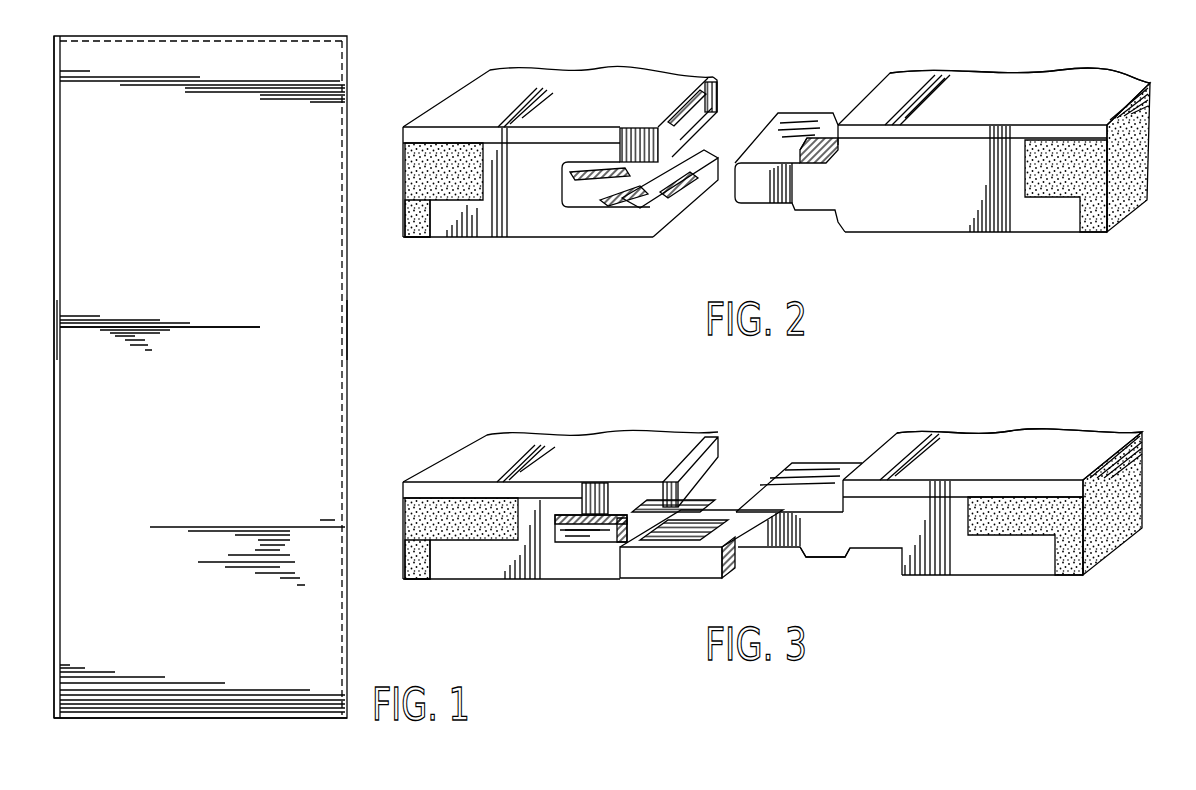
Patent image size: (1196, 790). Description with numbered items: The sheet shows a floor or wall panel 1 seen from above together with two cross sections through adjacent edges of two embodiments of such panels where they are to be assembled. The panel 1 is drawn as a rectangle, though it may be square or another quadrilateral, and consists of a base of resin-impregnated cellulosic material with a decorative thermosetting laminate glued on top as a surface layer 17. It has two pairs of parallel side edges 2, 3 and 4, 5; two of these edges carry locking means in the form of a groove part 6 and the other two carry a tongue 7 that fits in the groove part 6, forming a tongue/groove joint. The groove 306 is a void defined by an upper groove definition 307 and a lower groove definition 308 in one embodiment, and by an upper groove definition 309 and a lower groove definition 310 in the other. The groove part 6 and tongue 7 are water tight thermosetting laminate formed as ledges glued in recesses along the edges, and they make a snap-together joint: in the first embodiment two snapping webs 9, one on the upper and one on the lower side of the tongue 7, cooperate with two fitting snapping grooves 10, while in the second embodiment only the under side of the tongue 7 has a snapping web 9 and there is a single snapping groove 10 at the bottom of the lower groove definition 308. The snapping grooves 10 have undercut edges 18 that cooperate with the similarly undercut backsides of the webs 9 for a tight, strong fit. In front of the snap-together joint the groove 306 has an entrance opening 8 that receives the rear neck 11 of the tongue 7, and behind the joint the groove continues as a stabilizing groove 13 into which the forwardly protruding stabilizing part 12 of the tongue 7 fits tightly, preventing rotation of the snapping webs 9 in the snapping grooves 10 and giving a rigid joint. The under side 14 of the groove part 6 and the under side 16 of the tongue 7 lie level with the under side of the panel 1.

In FIG. 1, the panel 1 is at (265, 327).
In FIG. 1, the side edge 2 is at (348, 327).
In FIG. 1, the side edge 3 is at (57, 328).
In FIG. 1, the side edge 4 is at (284, 37).
In FIG. 1, the side edge 5 is at (210, 720).
In FIG. 2, the groove part 6 is at (558, 151).
In FIG. 3, the groove part 6 is at (594, 580).
In FIG. 2, the tongue 7 is at (994, 150).
In FIG. 3, the tongue 7 is at (992, 502).
In FIG. 2, the entrance opening 8 is at (652, 140).
In FIG. 3, the entrance opening 8 is at (686, 496).
In FIG. 2, the snapping web 9 is at (836, 120).
In FIG. 3, the snapping web 9 is at (820, 562).
In FIG. 2, the snapping groove 10 is at (626, 132).
In FIG. 3, the snapping groove 10 is at (604, 558).
In FIG. 2, the rear neck 11 is at (790, 172).
In FIG. 1, the stabilizing part 12 is at (57, 175).
In FIG. 2, the stabilizing part 12 is at (765, 205).
In FIG. 3, the stabilizing part 12 is at (774, 542).
In FIG. 1, the stabilizing groove 13 is at (340, 157).
In FIG. 2, the stabilizing groove 13 is at (595, 225).
In FIG. 3, the stabilizing groove 13 is at (584, 534).
In FIG. 2, the under side of the groove part 14 is at (476, 240).
In FIG. 3, the under side of the groove part 14 is at (480, 582).
In FIG. 2, the under side of the tongue 16 is at (890, 235).
In FIG. 3, the under side of the tongue 16 is at (976, 578).
In FIG. 2, the surface layer 17 is at (940, 78).
In FIG. 3, the surface layer 17 is at (1058, 450).
In FIG. 2, the undercut edge 18 is at (638, 133).
In FIG. 3, the undercut edge 18 is at (638, 558).
In FIG. 2, the groove 306 is at (695, 137).
In FIG. 3, the groove 306 is at (718, 504).
In FIG. 2, the upper groove definition 307 is at (670, 107).
In FIG. 2, the lower groove definition 308 is at (655, 228).
In FIG. 3, the upper groove definition 309 is at (622, 510).
In FIG. 3, the lower groove definition 310 is at (600, 580).